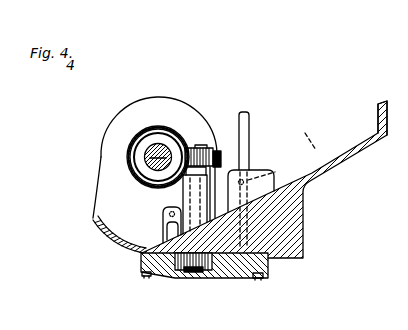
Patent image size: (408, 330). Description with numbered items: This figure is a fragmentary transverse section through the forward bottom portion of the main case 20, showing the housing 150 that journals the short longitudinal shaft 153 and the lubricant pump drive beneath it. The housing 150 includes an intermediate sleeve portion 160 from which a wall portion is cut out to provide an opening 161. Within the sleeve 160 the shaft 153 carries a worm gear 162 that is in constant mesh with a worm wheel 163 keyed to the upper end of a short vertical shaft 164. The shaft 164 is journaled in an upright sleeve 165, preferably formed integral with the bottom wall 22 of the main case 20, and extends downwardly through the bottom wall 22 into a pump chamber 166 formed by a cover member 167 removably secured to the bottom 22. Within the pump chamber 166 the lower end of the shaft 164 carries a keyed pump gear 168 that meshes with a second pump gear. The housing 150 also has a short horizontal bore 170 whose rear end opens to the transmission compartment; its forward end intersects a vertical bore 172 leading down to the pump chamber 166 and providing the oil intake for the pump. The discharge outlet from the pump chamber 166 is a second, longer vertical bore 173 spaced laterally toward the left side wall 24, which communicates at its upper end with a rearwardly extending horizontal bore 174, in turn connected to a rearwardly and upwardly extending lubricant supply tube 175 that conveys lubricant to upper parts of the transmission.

The main case 20 is at (340, 165).
The bottom wall 22 is at (107, 236).
The left side wall 24 is at (378, 104).
The housing 150 is at (103, 123).
The short shaft 153 is at (150, 158).
The intermediate sleeve portion 160 is at (146, 128).
The opening 161 is at (197, 146).
The worm gear 162 is at (160, 135).
The worm wheel 163 is at (228, 170).
The short vertical shaft 164 is at (208, 272).
The upright sleeve 165 is at (183, 197).
The pump chamber 166 is at (242, 278).
The cover member 167 is at (141, 262).
The pump gear 168 is at (191, 272).
The short horizontal bore 170 is at (165, 218).
The vertical bore 172 is at (141, 257).
The second vertical bore 173 is at (252, 178).
The horizontal bore 174 is at (242, 180).
The lubricant supply tube 175 is at (250, 128).